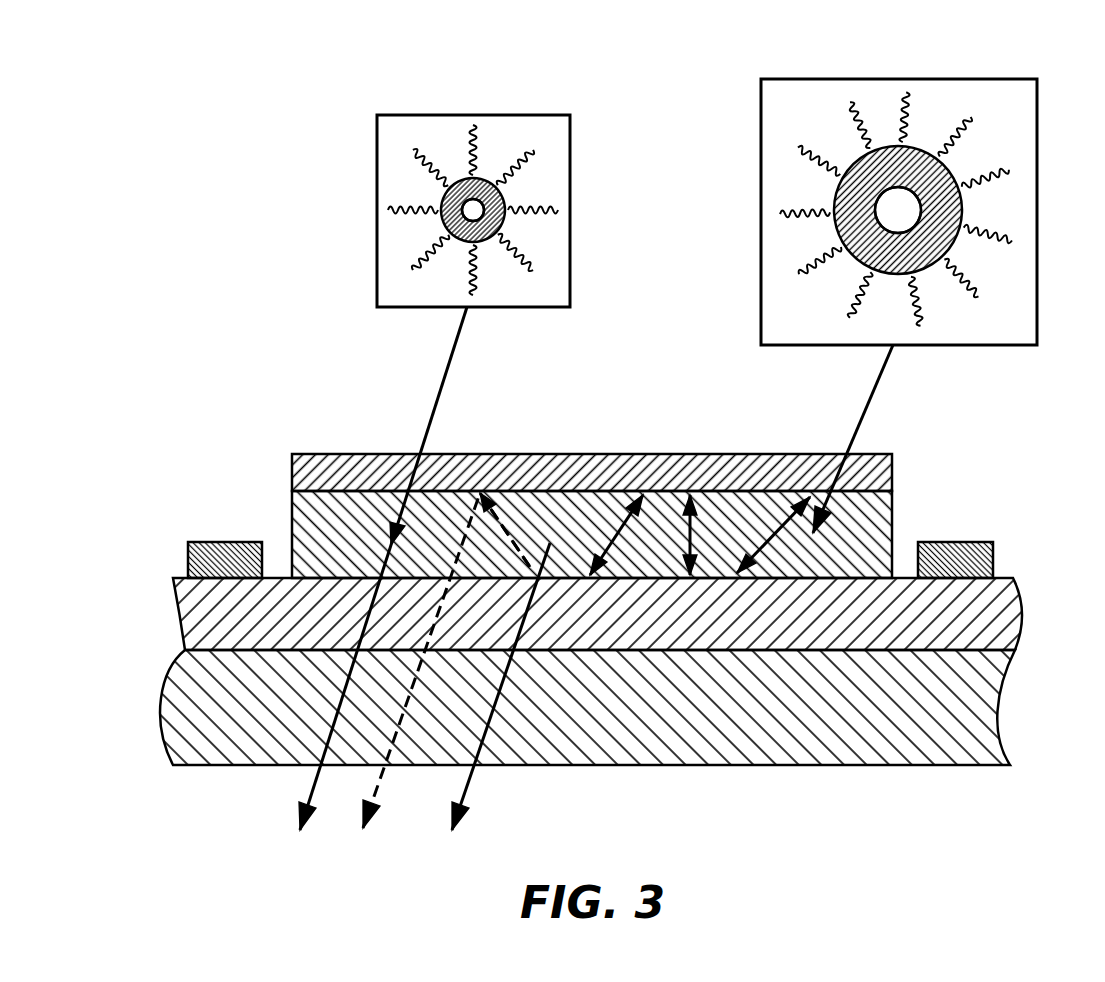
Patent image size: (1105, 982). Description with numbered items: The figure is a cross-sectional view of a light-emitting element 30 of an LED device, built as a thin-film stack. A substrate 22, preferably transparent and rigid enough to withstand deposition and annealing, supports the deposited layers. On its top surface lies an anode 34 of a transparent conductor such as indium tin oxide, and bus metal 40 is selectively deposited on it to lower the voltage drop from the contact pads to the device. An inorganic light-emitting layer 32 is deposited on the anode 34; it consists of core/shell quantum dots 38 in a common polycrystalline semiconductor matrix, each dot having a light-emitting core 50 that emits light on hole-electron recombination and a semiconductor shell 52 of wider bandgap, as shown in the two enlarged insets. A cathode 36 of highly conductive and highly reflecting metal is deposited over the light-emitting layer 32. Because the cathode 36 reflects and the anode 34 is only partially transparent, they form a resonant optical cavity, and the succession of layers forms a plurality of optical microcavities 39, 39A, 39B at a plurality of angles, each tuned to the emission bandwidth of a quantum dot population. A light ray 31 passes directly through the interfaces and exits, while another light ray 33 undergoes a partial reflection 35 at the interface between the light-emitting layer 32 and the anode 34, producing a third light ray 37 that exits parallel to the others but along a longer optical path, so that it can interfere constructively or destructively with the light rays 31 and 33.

The substrate 22 is at (160, 707).
The light-emitting element 30 is at (558, 481).
The light ray 31 is at (298, 802).
The inorganic light-emitting layer 32 is at (292, 508).
The light ray 33 is at (452, 802).
The anode 34 is at (178, 617).
The partial reflection 35 is at (503, 496).
The cathode 36 is at (292, 482).
The light ray 37 is at (363, 802).
The core/shell quantum dots 38 is at (490, 250).
The optical microcavity 39 is at (613, 517).
The optical microcavity 39A is at (705, 525).
The optical microcavity 39B is at (768, 530).
The bus metal 40 is at (188, 560).
The light-emitting core 50 is at (470, 203).
The semiconductor shell 52 is at (446, 196).